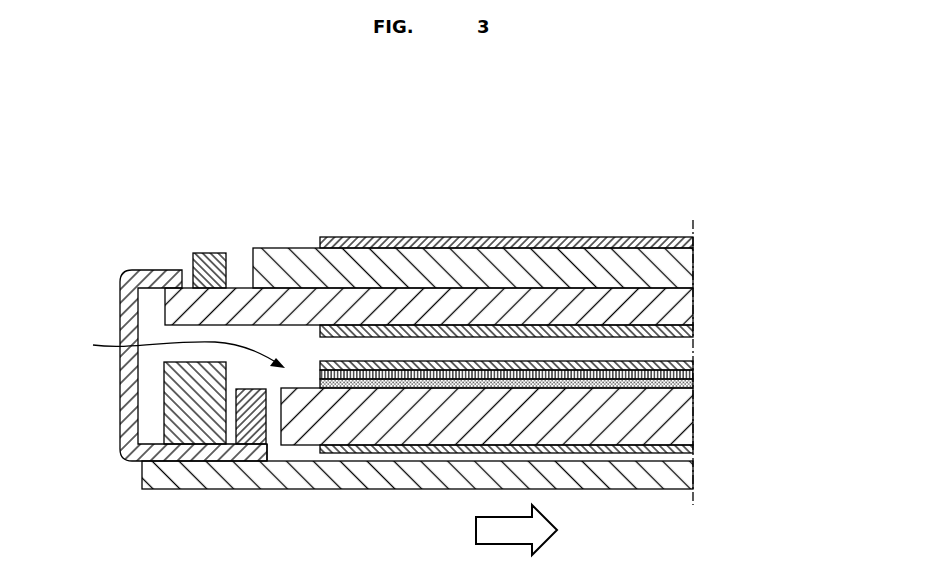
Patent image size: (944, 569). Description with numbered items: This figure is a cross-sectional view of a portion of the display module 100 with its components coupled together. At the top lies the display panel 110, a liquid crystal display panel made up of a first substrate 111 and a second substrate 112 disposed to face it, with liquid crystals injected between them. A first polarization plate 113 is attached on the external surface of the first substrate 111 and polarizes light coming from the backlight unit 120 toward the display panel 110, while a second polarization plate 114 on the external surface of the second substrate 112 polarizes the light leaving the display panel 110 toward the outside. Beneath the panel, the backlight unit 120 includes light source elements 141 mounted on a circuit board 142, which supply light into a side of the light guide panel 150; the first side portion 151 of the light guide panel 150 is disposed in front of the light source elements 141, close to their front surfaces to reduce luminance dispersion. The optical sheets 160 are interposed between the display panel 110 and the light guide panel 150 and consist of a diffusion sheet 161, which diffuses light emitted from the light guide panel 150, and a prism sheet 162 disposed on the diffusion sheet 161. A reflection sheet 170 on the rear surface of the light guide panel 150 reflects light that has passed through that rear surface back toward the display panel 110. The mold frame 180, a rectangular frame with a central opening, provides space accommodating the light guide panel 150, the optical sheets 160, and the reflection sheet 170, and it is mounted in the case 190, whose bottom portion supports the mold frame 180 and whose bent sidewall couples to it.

The display module 100 is at (142, 200).
The display panel 110 is at (499, 286).
The first substrate 111 is at (685, 313).
The second substrate 112 is at (685, 268).
The first polarization plate 113 is at (685, 332).
The second polarization plate 114 is at (688, 243).
The backlight unit 120 is at (170, 351).
The light source element 141 is at (253, 440).
The circuit board 142 is at (125, 406).
The light guide panel 150 is at (212, 253).
The first side portion 151 is at (273, 433).
The optical sheets 160 is at (506, 270).
The diffusion sheet 161 is at (478, 385).
The prism sheet 162 is at (438, 368).
The reflection sheet 170 is at (685, 448).
The mold frame 180 is at (190, 437).
The case 190 is at (685, 477).